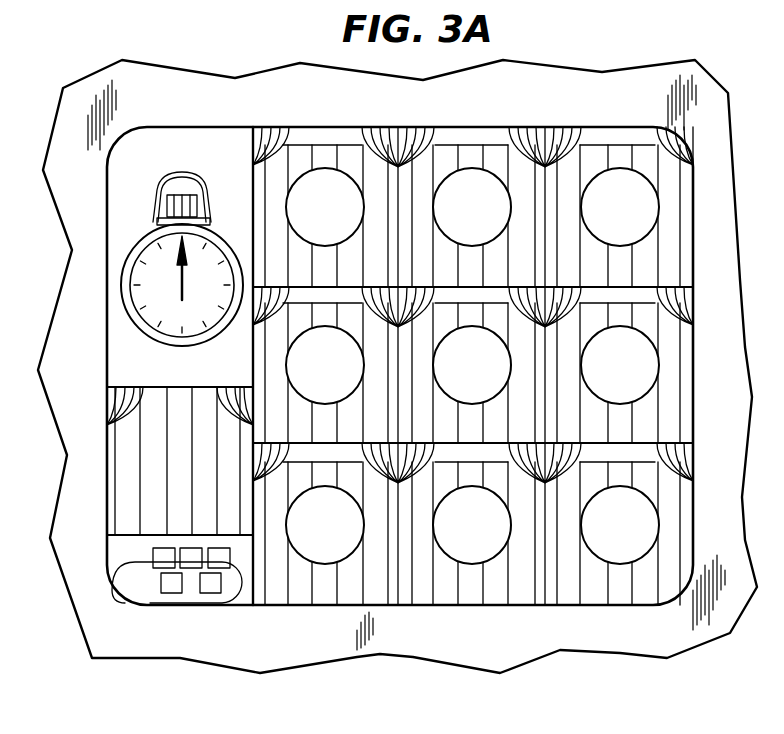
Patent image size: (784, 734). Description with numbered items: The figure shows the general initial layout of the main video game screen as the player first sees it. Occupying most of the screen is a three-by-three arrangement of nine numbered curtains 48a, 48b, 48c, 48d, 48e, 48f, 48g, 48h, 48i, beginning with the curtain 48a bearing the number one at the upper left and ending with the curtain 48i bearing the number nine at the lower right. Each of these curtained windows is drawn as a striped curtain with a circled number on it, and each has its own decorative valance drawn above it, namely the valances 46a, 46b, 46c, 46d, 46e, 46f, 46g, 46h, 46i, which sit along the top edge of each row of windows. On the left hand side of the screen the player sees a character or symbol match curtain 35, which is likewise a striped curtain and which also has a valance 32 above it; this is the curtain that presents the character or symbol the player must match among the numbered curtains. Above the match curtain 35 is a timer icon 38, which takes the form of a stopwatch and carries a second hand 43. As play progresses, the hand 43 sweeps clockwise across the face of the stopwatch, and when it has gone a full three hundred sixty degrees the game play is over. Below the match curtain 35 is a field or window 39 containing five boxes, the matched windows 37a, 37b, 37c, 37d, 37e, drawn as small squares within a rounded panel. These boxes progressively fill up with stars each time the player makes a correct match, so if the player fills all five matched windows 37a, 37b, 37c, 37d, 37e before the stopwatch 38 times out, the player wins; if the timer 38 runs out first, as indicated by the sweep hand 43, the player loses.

The valance 32 is at (167, 413).
The character or symbol match curtain 35 is at (217, 447).
The matched window 37a is at (205, 595).
The matched window 37b is at (168, 593).
The matched window 37c is at (150, 572).
The matched window 37d is at (152, 554).
The matched window 37e is at (242, 575).
The timer icon 38 is at (118, 243).
The field or window 39 is at (135, 585).
The second hand 43 is at (182, 270).
The valance 46a is at (278, 127).
The valance 46b is at (418, 128).
The valance 46c is at (562, 130).
The valance 46d is at (298, 297).
The valance 46e is at (450, 302).
The valance 46f is at (643, 298).
The valance 46g is at (297, 453).
The valance 46h is at (440, 455).
The valance 46i is at (643, 457).
The numbered curtain 48a is at (330, 157).
The numbered curtain 48b is at (471, 130).
The numbered curtain 48c is at (620, 150).
The numbered curtain 48d is at (290, 397).
The numbered curtain 48e is at (518, 395).
The numbered curtain 48f is at (667, 368).
The numbered curtain 48g is at (328, 575).
The numbered curtain 48h is at (478, 575).
The numbered curtain 48i is at (622, 572).